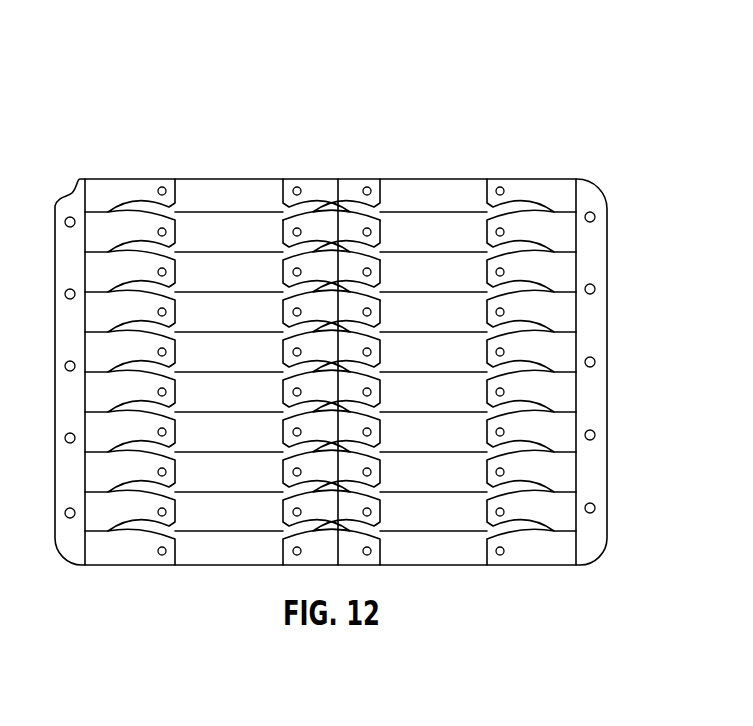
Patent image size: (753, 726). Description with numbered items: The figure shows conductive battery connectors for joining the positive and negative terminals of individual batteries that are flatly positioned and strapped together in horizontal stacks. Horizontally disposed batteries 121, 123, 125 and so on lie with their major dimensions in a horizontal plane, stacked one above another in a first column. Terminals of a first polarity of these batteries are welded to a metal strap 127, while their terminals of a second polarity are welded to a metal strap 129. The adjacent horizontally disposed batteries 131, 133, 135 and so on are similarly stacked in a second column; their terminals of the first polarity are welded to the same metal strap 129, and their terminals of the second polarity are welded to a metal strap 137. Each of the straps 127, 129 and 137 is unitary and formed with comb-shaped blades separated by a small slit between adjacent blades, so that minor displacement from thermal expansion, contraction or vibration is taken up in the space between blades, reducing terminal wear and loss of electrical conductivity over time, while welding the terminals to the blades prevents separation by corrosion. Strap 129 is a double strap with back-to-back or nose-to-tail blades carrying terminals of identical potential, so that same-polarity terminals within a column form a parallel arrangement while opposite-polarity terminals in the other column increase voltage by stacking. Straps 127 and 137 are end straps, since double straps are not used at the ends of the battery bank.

The horizontally disposed battery 121 is at (205, 190).
The horizontally disposed battery 123 is at (207, 233).
The horizontally disposed battery 125 is at (233, 270).
The metal strap 127 is at (97, 190).
The metal strap 129 is at (323, 190).
The horizontally disposed battery 131 is at (390, 193).
The horizontally disposed battery 133 is at (407, 230).
The horizontally disposed battery 135 is at (430, 267).
The metal strap 137 is at (547, 188).